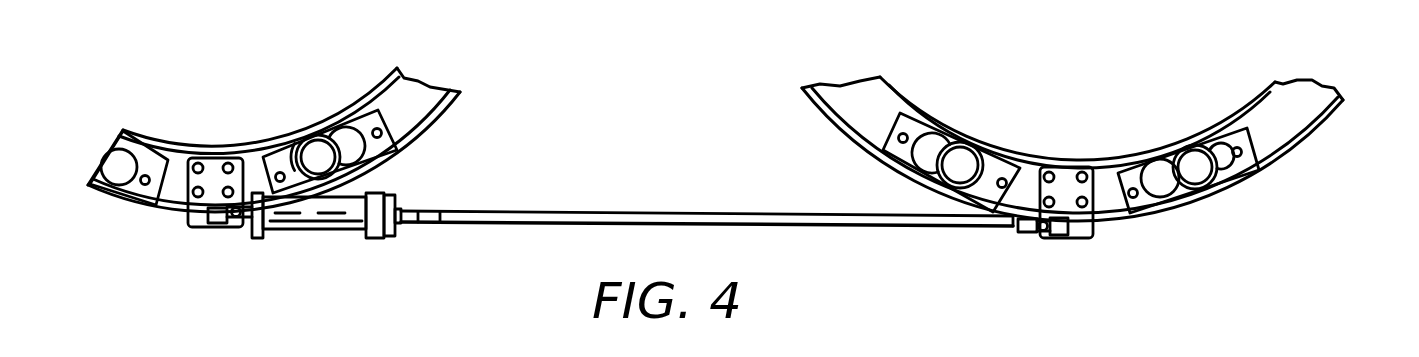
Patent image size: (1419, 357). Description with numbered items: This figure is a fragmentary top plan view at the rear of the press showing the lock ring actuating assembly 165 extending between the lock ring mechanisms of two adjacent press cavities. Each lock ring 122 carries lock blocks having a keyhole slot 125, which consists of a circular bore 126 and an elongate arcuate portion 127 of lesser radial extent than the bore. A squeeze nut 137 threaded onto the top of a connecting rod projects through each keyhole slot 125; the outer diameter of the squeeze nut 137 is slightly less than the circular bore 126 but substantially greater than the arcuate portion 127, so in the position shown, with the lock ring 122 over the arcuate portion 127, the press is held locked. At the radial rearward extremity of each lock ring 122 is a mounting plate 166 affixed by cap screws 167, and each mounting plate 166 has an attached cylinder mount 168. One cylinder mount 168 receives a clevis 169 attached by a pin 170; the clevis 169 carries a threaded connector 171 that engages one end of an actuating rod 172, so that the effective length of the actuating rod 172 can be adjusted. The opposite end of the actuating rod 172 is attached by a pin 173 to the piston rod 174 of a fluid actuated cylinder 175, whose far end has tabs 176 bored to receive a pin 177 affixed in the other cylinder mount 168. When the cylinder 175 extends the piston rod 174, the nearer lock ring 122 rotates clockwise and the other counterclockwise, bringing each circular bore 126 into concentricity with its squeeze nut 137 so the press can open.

The lock ring 122 is at (460, 92).
The keyhole slot 125 is at (341, 133).
The circular bore 126 is at (376, 157).
The elongate arcuate portion 127 is at (1237, 152).
The squeeze nut 137 is at (314, 151).
The lock ring actuating assembly 165 is at (613, 229).
The mounting plate 166 is at (195, 181).
The cap screws 167 is at (193, 210).
The cylinder mount 168 is at (213, 223).
The clevis 169 is at (1027, 234).
The pin 170 is at (1043, 232).
The threaded connector 171 is at (1010, 236).
The actuating rod 172 is at (822, 227).
The pin 173 is at (407, 217).
The piston rod 174 is at (450, 212).
The fluid actuated cylinder 175 is at (337, 230).
The tabs 176 is at (247, 220).
The pin 177 is at (270, 213).